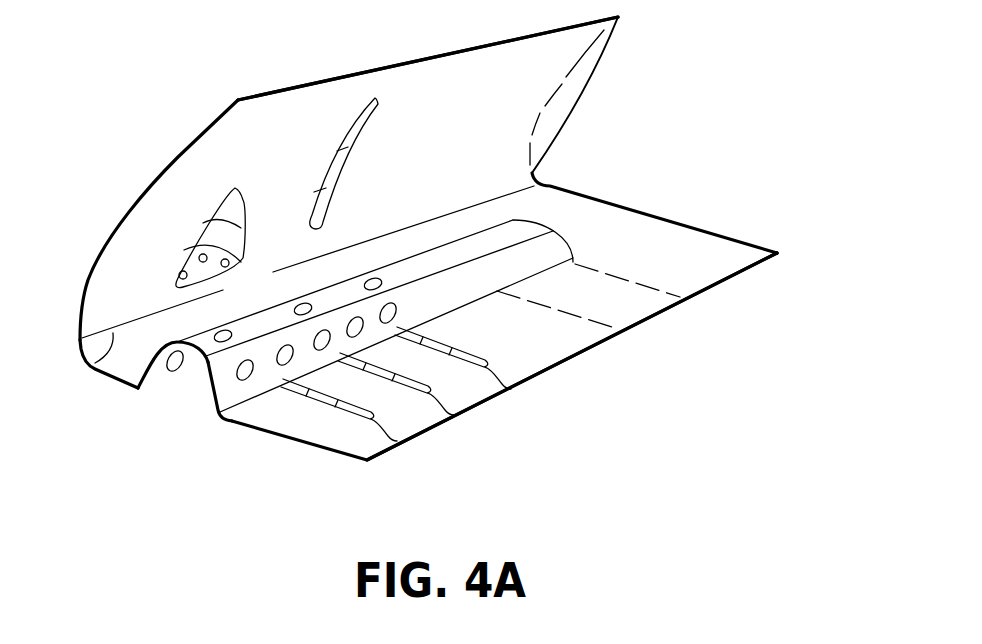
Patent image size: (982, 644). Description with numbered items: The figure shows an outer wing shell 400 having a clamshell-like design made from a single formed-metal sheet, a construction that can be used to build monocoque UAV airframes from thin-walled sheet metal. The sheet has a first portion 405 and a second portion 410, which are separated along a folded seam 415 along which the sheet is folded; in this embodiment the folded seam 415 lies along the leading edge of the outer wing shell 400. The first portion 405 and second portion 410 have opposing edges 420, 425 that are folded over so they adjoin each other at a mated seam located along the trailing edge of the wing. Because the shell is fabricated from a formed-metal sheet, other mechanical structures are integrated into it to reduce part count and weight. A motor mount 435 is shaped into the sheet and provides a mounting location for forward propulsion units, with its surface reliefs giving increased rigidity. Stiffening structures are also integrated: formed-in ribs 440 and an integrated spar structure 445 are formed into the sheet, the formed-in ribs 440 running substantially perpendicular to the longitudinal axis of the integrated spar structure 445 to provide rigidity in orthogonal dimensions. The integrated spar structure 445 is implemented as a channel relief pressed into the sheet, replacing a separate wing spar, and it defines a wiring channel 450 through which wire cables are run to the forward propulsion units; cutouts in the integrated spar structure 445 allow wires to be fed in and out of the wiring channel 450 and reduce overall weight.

The outer wing shell 400 is at (783, 447).
The first portion 405 is at (461, 141).
The second portion 410 is at (531, 351).
The folded seam 415 is at (95, 366).
The opposing edge 420 is at (357, 73).
The opposing edge 425 is at (594, 347).
The motor mount 435 is at (200, 232).
The formed-in ribs 440 is at (337, 173).
The integrated spar structure 445 is at (463, 286).
The wiring channel 450 is at (180, 398).